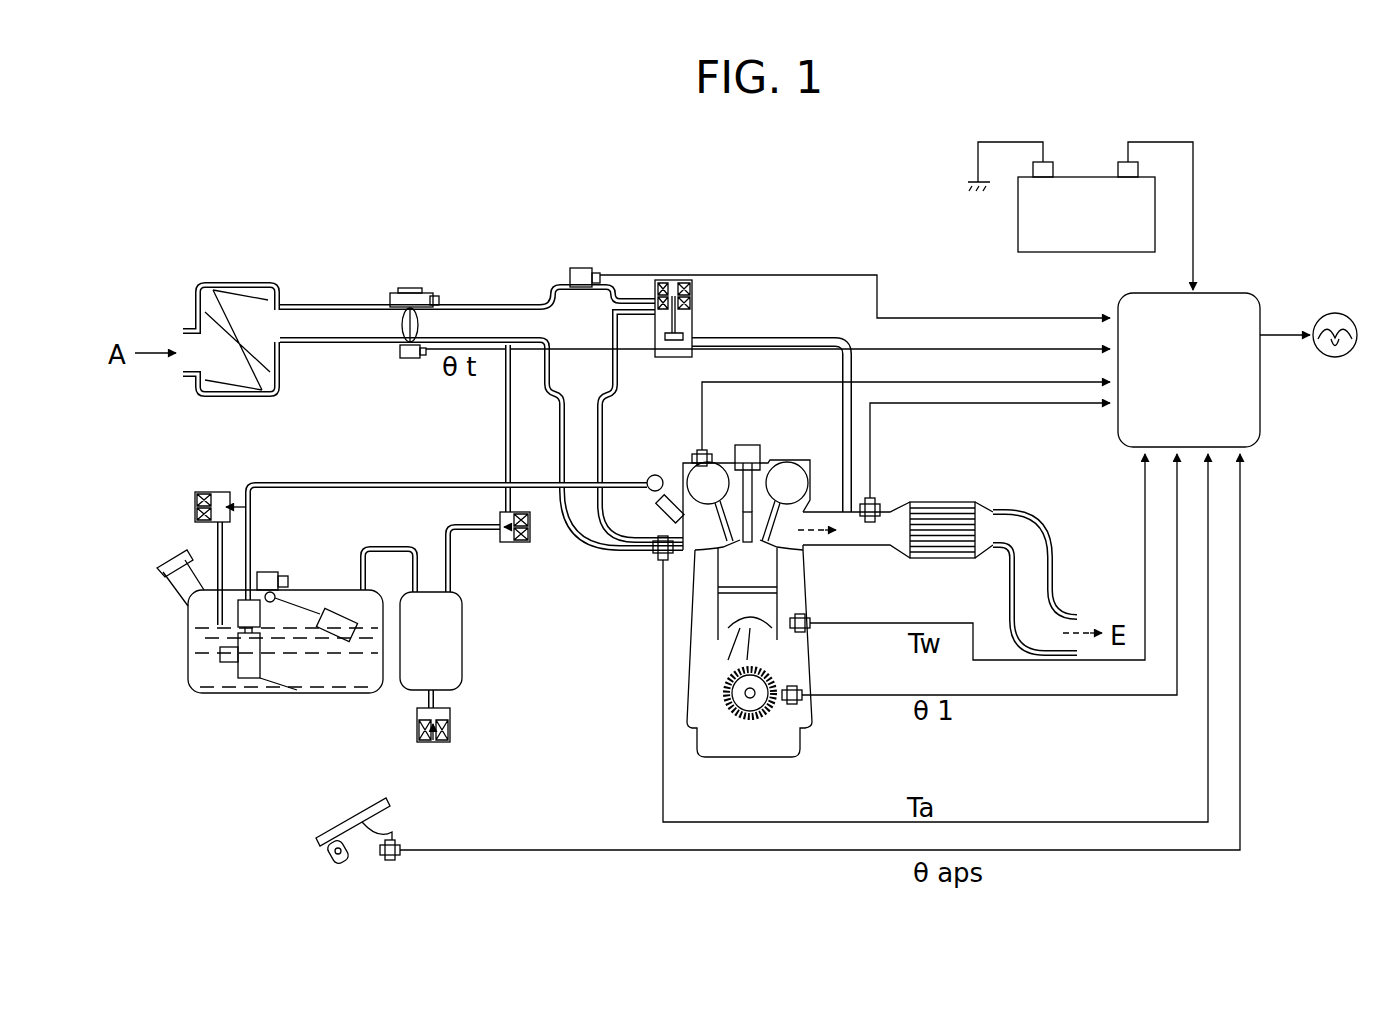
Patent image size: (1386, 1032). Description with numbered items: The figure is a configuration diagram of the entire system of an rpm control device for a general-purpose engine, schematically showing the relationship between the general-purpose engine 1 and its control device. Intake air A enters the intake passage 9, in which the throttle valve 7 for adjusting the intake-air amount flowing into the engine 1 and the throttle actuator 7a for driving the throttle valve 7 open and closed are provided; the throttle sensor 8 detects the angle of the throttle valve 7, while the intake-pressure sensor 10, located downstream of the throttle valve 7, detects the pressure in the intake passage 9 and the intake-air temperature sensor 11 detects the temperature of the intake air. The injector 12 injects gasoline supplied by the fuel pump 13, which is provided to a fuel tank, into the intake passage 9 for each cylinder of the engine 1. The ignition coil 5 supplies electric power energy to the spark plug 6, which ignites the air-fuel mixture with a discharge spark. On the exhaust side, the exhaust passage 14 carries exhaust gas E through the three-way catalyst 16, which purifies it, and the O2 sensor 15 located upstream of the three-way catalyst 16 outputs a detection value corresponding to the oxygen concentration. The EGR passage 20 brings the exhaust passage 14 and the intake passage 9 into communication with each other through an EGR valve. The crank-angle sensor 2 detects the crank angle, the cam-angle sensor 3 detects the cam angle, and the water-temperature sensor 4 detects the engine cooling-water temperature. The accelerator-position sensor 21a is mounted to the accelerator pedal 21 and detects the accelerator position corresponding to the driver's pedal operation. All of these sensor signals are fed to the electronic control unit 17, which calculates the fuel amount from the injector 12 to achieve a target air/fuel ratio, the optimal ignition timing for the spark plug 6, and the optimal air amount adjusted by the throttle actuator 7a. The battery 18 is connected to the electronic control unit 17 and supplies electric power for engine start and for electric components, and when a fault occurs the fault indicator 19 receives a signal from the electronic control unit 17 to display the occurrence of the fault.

The general-purpose engine 1 is at (748, 757).
The crank-angle sensor 2 is at (803, 700).
The cam-angle sensor 3 is at (700, 452).
The water-temperature sensor 4 is at (805, 632).
The ignition coil 5 is at (745, 445).
The spark plug 6 is at (752, 542).
The throttle valve 7 is at (420, 323).
The throttle actuator (electronic throttle) 7a is at (414, 288).
The throttle sensor 8 is at (411, 358).
The intake passage 9 is at (585, 457).
The intake-pressure sensor 10 is at (581, 268).
The intake-air temperature sensor 11 is at (665, 560).
The injector 12 is at (662, 500).
The fuel pump 13 is at (235, 693).
The exhaust passage 14 is at (867, 533).
The O2 sensor 15 is at (871, 498).
The three-way catalyst 16 is at (945, 500).
The electronic control unit (ECU) 17 is at (1261, 385).
The battery 18 is at (1073, 177).
The fault indicator 19 is at (1333, 312).
The EGR passage 20 is at (805, 333).
The accelerator pedal 21 is at (342, 824).
The accelerator-position sensor 21a is at (393, 862).